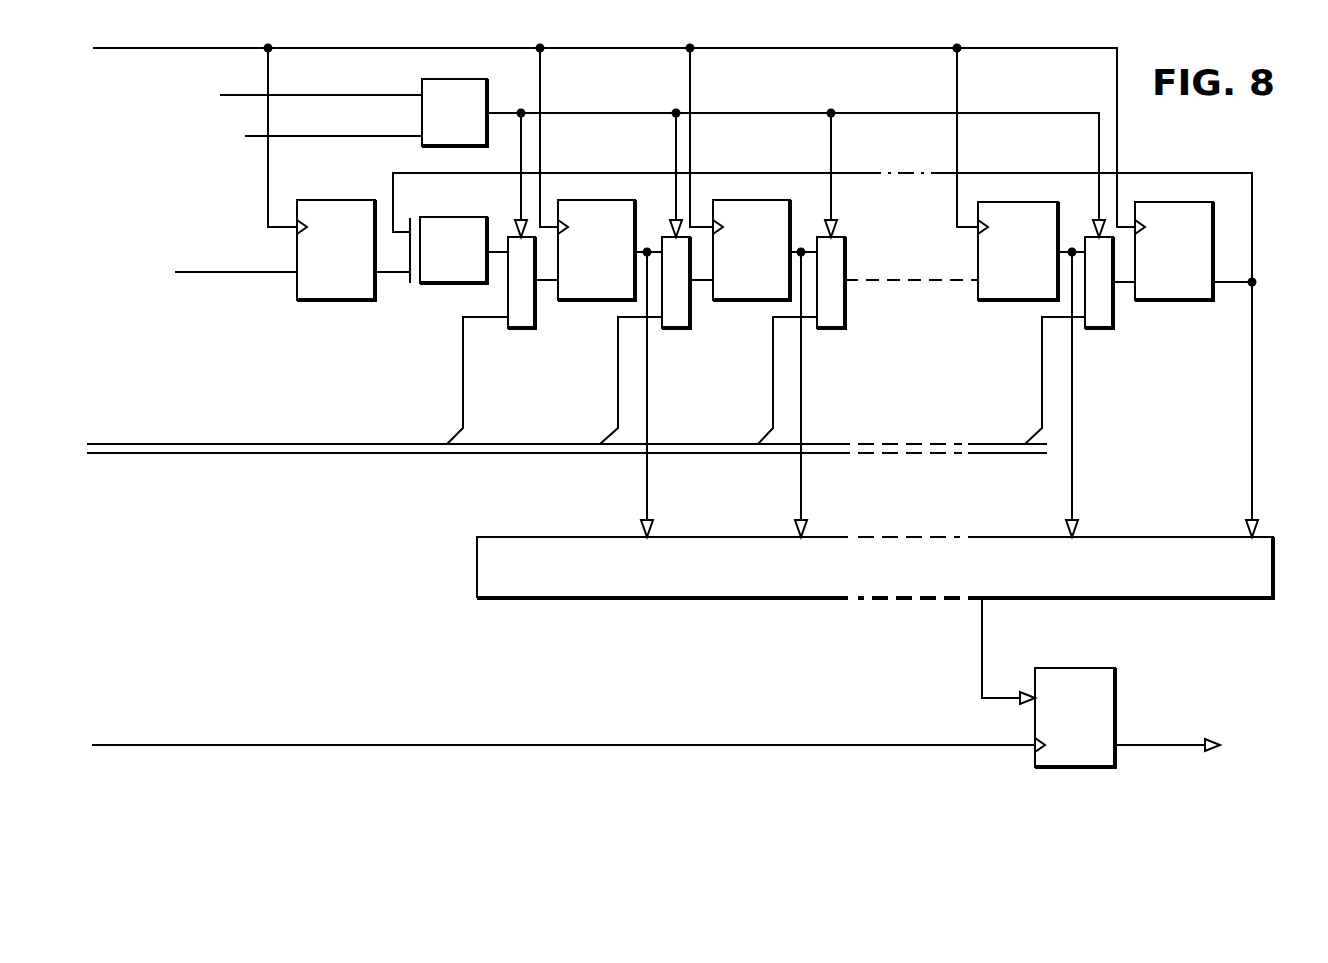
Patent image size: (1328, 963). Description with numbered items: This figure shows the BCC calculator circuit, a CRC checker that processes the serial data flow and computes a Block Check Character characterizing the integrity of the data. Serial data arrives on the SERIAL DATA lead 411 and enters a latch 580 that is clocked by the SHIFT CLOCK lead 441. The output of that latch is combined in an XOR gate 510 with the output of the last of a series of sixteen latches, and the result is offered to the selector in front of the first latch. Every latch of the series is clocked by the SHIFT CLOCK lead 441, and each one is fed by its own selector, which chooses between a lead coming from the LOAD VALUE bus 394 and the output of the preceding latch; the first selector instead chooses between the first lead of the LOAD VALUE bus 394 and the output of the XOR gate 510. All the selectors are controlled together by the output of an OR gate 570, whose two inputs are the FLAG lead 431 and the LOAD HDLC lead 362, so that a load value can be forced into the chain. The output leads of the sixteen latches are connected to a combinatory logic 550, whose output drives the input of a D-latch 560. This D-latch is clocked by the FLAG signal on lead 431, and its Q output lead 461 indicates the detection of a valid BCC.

The SHIFT CLOCK lead 441 is at (348, 50).
The FLAG lead 431 is at (240, 745).
The LOAD HDLC lead 362 is at (257, 151).
The SERIAL DATA lead 411 is at (230, 247).
The latch 580 is at (322, 198).
The OR gate 570 is at (458, 78).
The XOR gate 510 is at (458, 217).
The LOAD VALUE bus 394 is at (307, 445).
The combinatory logic 550 is at (508, 540).
The D-latch 560 is at (1098, 670).
The Q output lead 461 is at (1220, 731).